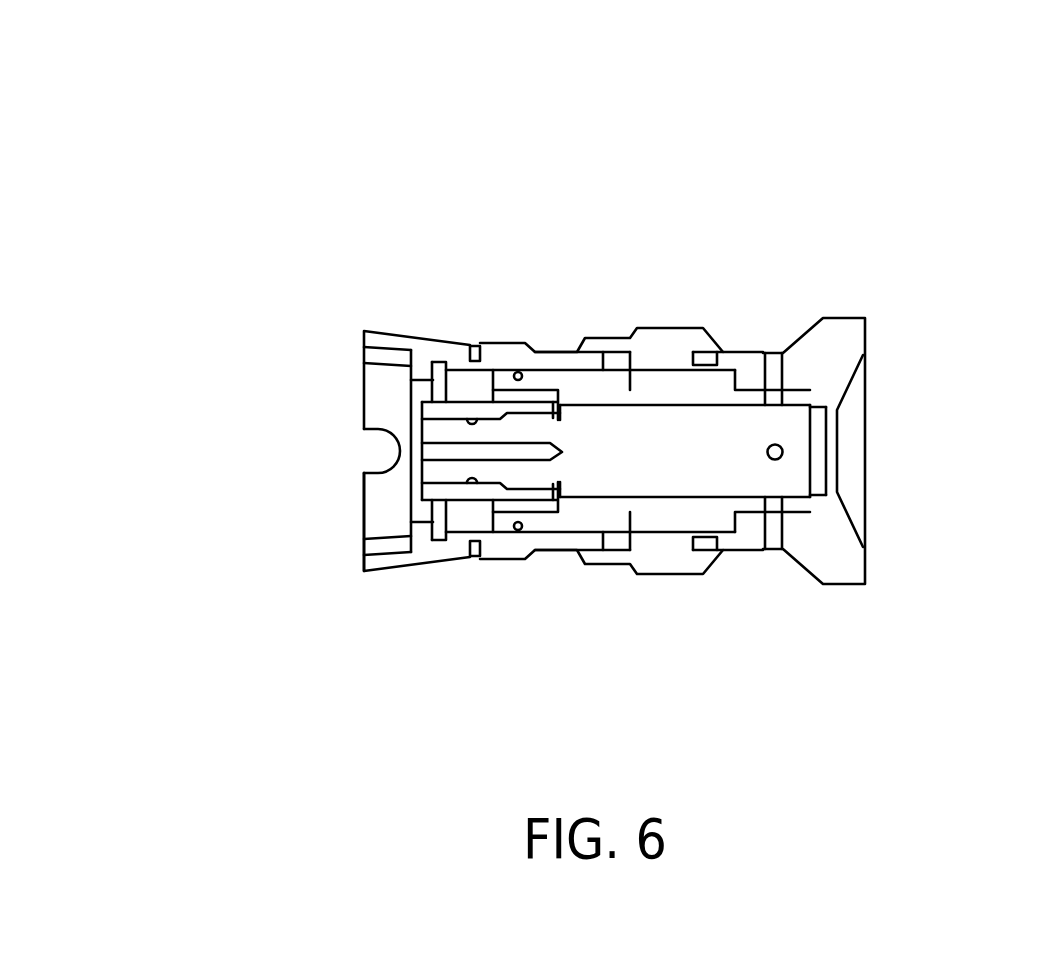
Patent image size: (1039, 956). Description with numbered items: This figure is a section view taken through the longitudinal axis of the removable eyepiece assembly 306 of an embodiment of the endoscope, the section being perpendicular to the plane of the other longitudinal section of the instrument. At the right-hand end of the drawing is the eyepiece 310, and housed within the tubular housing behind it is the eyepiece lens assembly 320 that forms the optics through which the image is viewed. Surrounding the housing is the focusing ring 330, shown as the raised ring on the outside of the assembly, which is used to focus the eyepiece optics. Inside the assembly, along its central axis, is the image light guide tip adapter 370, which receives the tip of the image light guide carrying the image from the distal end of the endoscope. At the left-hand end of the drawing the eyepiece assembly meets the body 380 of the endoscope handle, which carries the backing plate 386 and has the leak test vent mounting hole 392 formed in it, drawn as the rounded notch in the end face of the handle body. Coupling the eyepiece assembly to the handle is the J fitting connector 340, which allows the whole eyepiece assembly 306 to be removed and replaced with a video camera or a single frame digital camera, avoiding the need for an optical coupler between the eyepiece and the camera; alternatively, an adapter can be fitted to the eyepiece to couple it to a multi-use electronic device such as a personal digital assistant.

The removable eyepiece assembly 306 is at (326, 183).
The eyepiece 310 is at (865, 345).
The eyepiece lens assembly 320 is at (745, 398).
The focusing ring 330 is at (648, 328).
The J fitting connector 340 is at (518, 512).
The image light guide tip adapter 370 is at (562, 452).
The body 380 is at (362, 339).
The backing plate 386 is at (363, 480).
The leak test vent mounting hole 392 is at (367, 448).